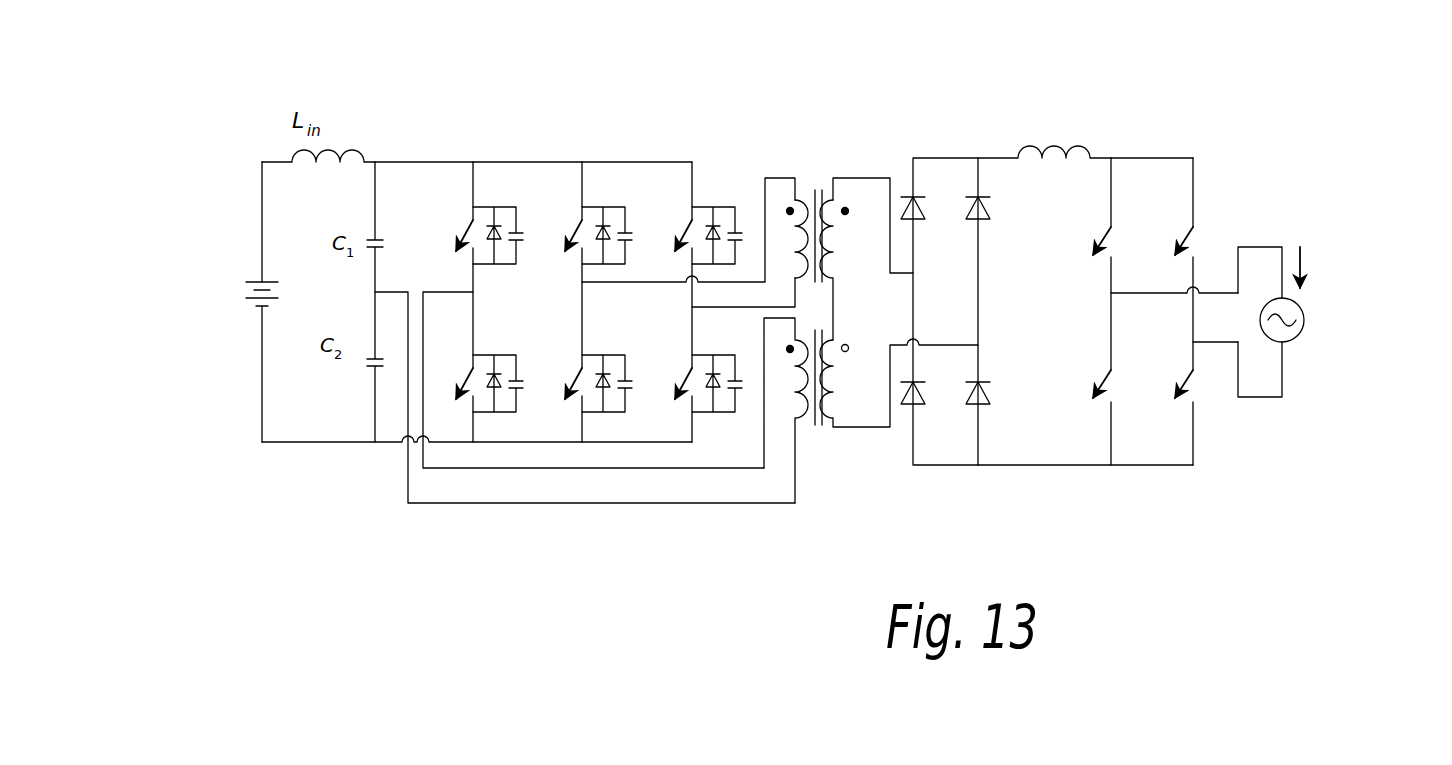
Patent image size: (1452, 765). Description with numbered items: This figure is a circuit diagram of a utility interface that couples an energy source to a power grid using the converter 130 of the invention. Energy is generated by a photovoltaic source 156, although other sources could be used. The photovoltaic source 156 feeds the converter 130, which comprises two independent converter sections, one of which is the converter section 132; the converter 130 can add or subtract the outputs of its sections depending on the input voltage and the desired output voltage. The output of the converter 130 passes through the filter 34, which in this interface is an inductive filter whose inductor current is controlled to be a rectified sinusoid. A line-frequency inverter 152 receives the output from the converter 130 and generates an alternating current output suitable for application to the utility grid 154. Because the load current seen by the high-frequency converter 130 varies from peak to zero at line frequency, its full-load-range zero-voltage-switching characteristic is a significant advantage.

The photovoltaic source 156 is at (206, 239).
The converter 130 is at (407, 106).
The converter section 132 is at (979, 104).
The filter 34 is at (1094, 111).
The line-frequency inverter 152 is at (1214, 148).
The utility grid 154 is at (1358, 257).